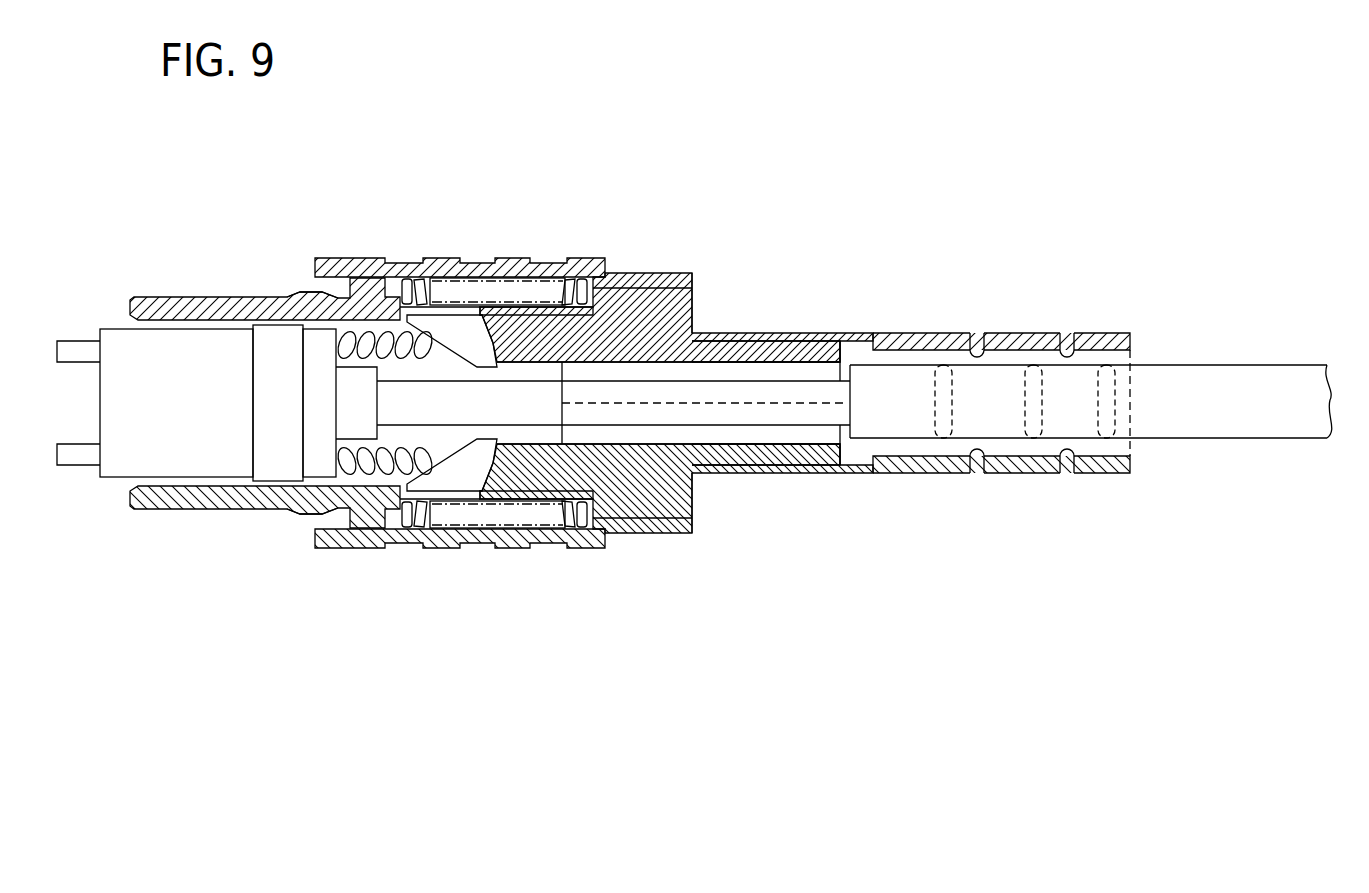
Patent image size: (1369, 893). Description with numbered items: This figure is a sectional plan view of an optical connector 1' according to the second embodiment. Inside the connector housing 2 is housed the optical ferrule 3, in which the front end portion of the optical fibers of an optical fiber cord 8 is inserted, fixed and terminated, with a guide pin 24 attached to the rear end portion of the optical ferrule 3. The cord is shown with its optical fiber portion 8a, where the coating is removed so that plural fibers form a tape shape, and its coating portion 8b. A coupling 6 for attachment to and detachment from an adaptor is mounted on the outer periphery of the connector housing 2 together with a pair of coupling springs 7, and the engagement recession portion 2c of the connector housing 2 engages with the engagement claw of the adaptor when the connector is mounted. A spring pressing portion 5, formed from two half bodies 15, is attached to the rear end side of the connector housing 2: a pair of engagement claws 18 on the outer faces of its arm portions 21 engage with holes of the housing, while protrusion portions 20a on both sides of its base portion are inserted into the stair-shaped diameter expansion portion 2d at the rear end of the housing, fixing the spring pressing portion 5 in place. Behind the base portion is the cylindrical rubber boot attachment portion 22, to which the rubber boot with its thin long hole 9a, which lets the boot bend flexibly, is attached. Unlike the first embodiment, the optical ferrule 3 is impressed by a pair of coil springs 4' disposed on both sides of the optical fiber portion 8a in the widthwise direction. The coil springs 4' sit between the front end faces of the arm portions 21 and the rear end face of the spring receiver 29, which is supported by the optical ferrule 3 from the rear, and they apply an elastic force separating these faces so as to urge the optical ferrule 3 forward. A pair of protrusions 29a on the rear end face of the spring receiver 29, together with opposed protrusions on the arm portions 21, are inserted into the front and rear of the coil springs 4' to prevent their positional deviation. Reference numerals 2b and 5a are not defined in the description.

The optical connector 1' is at (694, 340).
The connector housing 2 is at (192, 312).
The shell rear portion 2b is at (650, 287).
The engagement recession portion 2c is at (313, 297).
The stair-shaped diameter expansion portion 2d is at (612, 290).
The optical ferrule 3 is at (113, 347).
The coil springs 4' is at (428, 395).
The spring pressing portion 5 is at (677, 266).
The center contact pin 5a is at (704, 443).
The coupling 6 is at (505, 258).
The coupling springs 7 is at (410, 290).
The optical fiber cord 8 is at (887, 387).
The optical fiber portion 8a is at (797, 390).
The coating portion 8b is at (916, 397).
The thin long hole 9a is at (1067, 470).
The half bodies 15 is at (823, 367).
The engagement claws 18 is at (420, 300).
The protrusion portions 20a is at (677, 310).
The arm portions 21 is at (538, 300).
The rubber boot attachment portion 22 is at (800, 449).
The guide pin 24 is at (78, 458).
The spring receiver 29 is at (320, 414).
The protrusions 29a is at (355, 330).